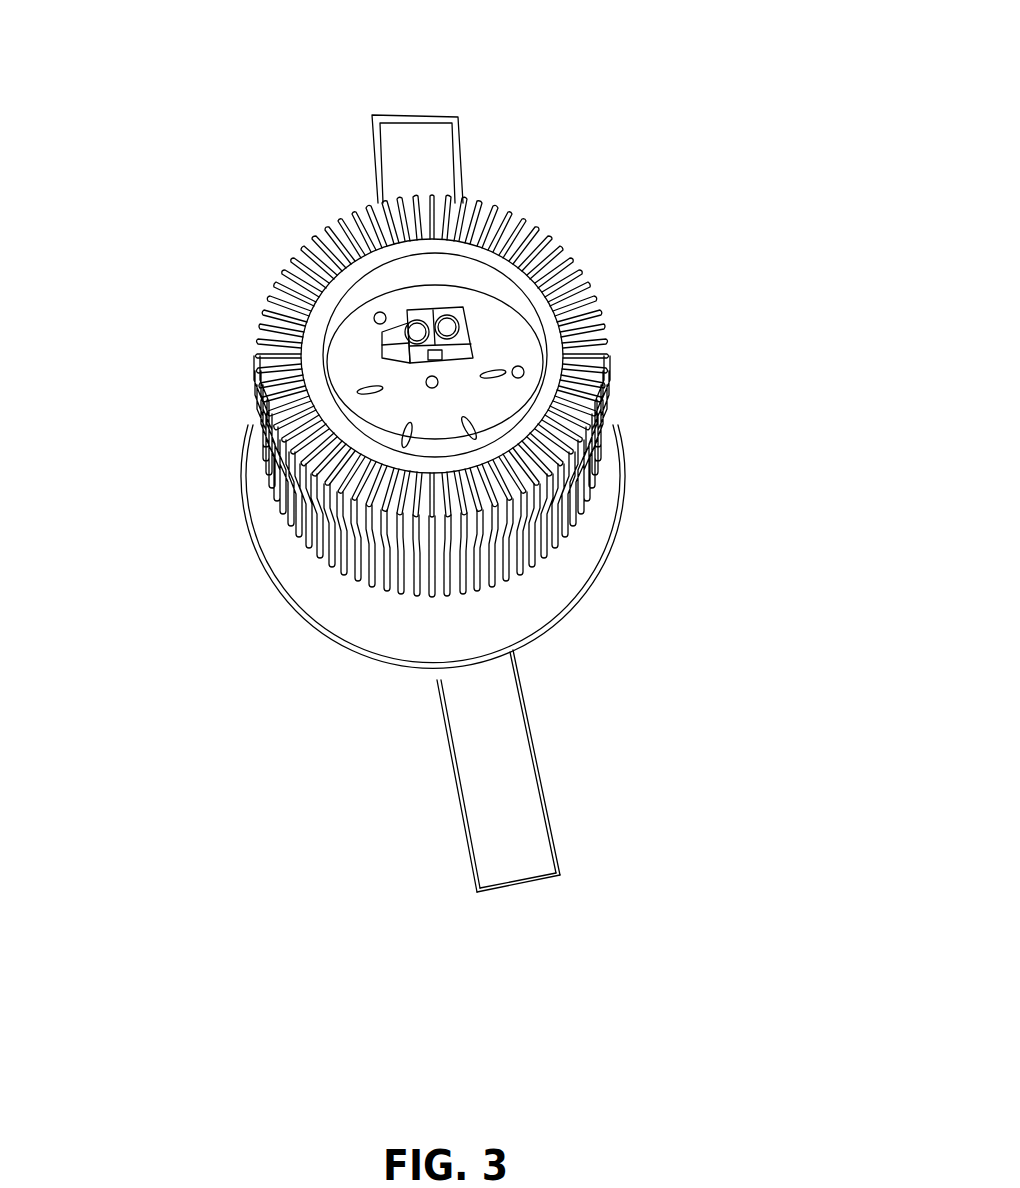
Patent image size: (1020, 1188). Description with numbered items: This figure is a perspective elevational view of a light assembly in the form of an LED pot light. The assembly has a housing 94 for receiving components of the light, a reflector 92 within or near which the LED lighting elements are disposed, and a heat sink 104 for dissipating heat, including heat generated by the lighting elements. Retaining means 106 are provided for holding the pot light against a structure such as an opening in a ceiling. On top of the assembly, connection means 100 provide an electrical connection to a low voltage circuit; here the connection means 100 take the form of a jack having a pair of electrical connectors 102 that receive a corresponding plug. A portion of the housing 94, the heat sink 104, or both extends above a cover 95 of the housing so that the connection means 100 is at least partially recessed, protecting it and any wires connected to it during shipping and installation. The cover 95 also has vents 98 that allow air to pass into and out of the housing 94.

The reflector 92 is at (610, 488).
The housing 94 is at (490, 285).
The cover 95 is at (498, 335).
The vents 98 is at (490, 382).
The connection means 100 is at (395, 351).
The electrical connectors 102 is at (447, 328).
The heat sink 104 is at (607, 435).
The retaining means 106 is at (448, 120).